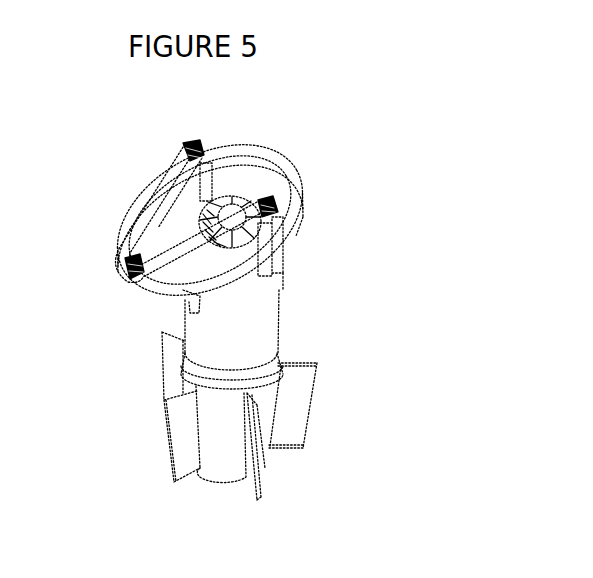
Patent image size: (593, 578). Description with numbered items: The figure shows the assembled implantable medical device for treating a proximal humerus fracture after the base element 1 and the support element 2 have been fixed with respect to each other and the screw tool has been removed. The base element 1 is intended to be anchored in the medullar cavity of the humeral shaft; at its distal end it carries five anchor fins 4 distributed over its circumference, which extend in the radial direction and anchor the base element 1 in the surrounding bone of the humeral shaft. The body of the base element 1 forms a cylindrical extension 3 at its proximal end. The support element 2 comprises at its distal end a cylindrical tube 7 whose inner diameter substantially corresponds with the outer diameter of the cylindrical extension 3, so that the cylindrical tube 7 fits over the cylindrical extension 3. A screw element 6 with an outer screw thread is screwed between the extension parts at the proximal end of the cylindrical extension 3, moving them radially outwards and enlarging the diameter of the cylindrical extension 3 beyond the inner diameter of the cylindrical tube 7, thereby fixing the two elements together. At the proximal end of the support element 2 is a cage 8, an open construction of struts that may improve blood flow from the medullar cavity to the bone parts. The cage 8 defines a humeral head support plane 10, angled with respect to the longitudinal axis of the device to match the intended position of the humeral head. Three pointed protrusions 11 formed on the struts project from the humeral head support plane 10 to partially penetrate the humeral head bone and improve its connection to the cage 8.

The base element 1 is at (150, 470).
The support element 2 is at (290, 275).
The cylindrical extension 3 is at (252, 379).
The anchor fins 4 is at (252, 457).
The screw element 6 is at (213, 205).
The cylindrical tube 7 is at (236, 342).
The cage 8 is at (318, 166).
The humeral head support plane 10 is at (162, 236).
The pointed protrusions 11 is at (195, 148).